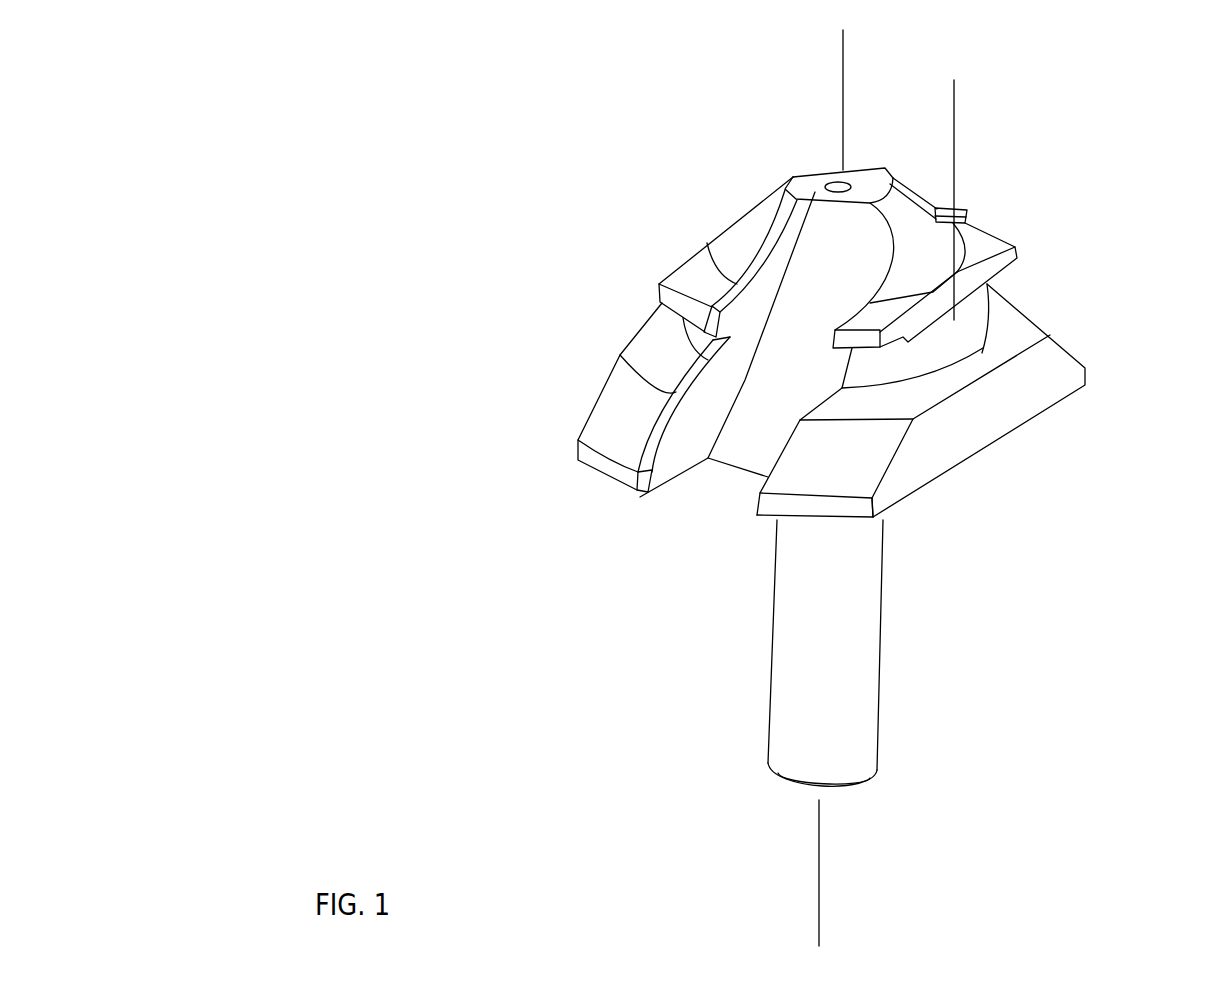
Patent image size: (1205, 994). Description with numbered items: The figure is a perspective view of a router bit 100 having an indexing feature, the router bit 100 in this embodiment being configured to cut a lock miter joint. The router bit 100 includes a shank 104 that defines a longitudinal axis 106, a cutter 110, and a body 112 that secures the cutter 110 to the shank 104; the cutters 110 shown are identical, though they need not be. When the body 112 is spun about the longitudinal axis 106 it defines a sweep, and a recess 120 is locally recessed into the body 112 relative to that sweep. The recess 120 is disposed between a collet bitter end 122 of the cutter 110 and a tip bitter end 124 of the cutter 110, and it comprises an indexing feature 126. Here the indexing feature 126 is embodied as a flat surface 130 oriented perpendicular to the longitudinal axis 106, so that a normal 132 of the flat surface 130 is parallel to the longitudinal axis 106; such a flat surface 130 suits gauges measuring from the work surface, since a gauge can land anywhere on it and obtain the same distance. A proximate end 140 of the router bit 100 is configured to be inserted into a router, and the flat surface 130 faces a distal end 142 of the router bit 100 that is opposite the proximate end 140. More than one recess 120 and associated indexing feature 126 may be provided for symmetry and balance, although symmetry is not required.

The router bit 100 is at (567, 212).
The shank 104 is at (832, 728).
The longitudinal axis 106 is at (843, 92).
The cutter 110 is at (960, 210).
The body 112 is at (663, 355).
The recess 120 is at (979, 268).
The collet bitter end 122 is at (640, 497).
The tip bitter end 124 is at (797, 195).
The indexing feature 126 is at (991, 352).
The flat surface 130 is at (968, 307).
The normal 132 is at (954, 127).
The proximate end 140 is at (788, 763).
The distal end 142 is at (807, 182).